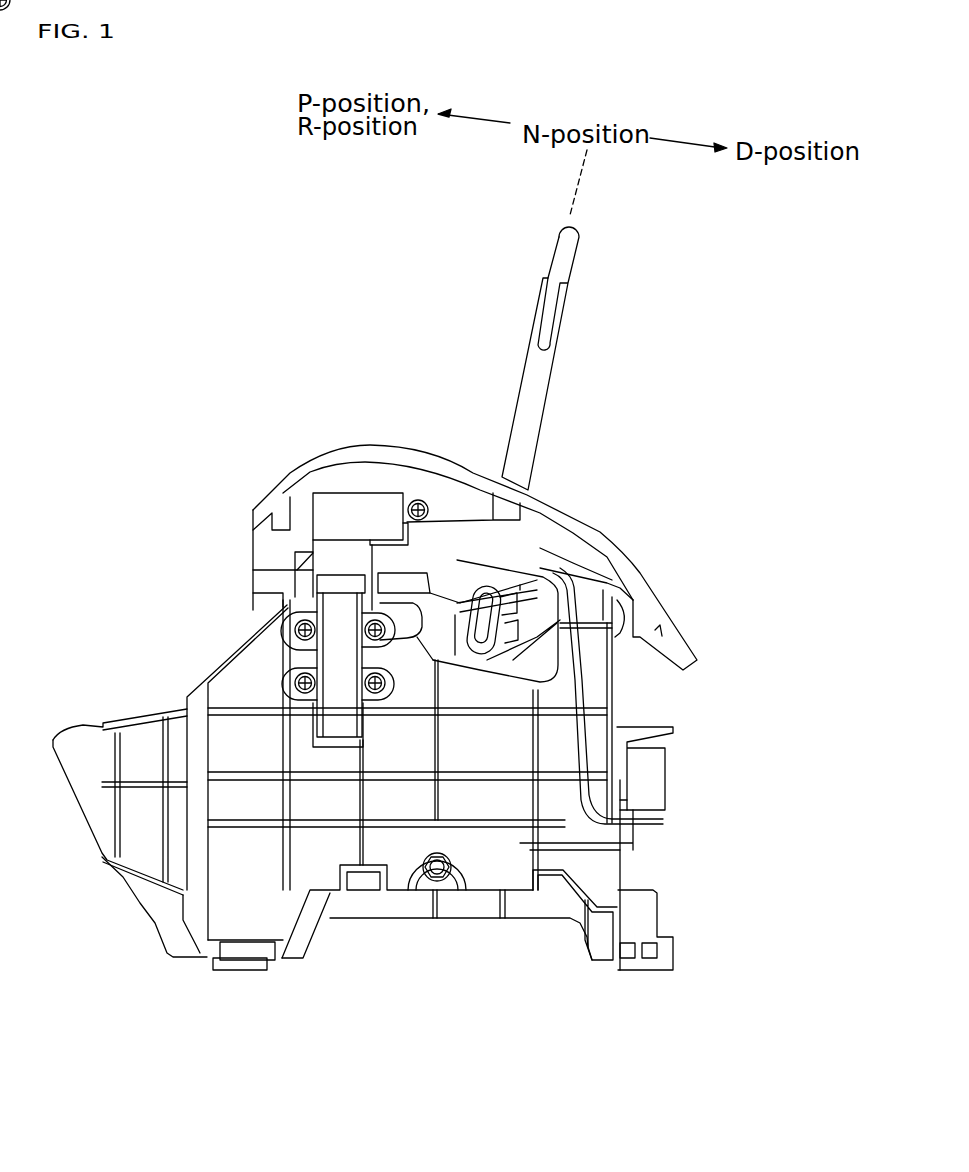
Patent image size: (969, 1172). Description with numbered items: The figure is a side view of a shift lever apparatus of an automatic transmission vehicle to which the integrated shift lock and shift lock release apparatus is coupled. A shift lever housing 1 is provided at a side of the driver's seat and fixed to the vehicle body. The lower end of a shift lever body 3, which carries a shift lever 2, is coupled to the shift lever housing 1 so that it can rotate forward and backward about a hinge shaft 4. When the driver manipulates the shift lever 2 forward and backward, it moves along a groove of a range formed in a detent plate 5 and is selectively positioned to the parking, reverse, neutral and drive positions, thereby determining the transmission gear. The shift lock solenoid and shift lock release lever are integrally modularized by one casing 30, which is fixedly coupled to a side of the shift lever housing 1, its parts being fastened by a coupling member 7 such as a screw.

The shift lever housing 1 is at (207, 908).
The shift lever 2 is at (533, 383).
The shift lever body 3 is at (455, 603).
The hinge shaft 4 is at (437, 872).
The detent plate 5 is at (628, 573).
The coupling member 7 is at (420, 497).
The casing 30 is at (347, 520).